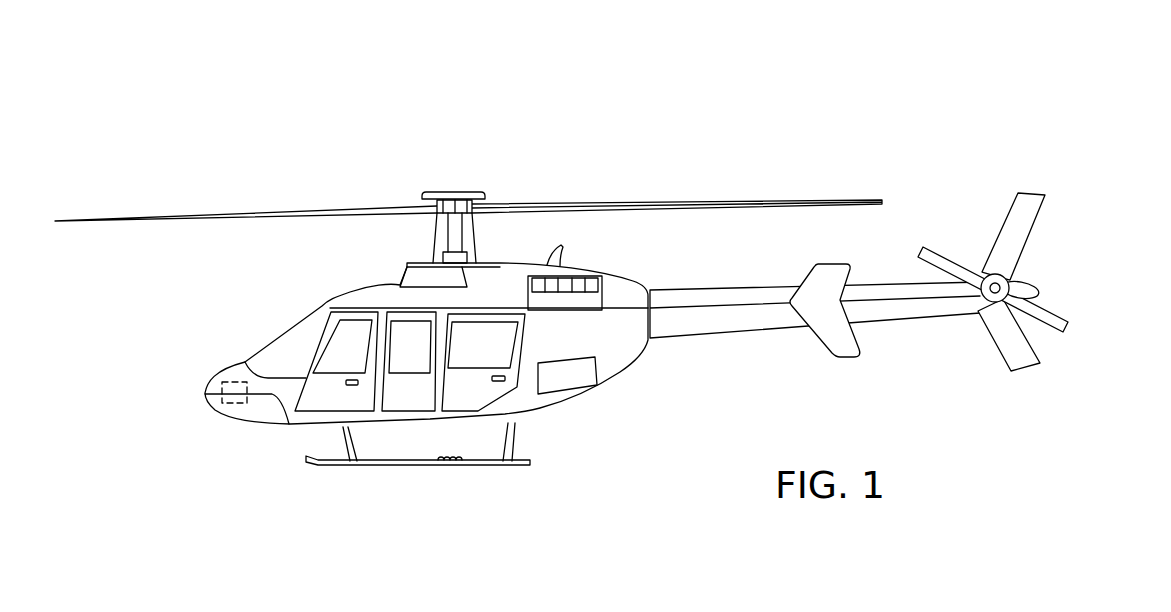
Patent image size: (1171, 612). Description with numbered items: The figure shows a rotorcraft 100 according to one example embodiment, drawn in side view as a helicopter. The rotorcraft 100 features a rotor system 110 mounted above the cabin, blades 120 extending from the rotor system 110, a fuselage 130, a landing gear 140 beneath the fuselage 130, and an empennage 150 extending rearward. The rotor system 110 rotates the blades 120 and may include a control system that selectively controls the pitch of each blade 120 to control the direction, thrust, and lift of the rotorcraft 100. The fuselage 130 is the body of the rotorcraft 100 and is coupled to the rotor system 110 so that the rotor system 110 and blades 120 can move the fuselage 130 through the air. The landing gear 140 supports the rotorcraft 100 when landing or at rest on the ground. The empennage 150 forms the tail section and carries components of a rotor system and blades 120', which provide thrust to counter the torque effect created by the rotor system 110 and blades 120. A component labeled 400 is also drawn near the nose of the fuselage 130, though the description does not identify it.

The rotorcraft 100 is at (220, 86).
The rotor system 110 is at (452, 191).
The blades 120 is at (468, 180).
The blades 120' is at (1040, 282).
The fuselage 130 is at (250, 424).
The landing gear 140 is at (405, 469).
The empennage 150 is at (737, 334).
The sensor module 400 is at (228, 382).